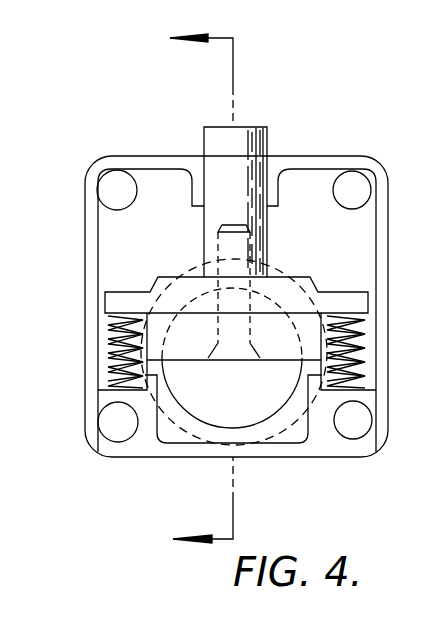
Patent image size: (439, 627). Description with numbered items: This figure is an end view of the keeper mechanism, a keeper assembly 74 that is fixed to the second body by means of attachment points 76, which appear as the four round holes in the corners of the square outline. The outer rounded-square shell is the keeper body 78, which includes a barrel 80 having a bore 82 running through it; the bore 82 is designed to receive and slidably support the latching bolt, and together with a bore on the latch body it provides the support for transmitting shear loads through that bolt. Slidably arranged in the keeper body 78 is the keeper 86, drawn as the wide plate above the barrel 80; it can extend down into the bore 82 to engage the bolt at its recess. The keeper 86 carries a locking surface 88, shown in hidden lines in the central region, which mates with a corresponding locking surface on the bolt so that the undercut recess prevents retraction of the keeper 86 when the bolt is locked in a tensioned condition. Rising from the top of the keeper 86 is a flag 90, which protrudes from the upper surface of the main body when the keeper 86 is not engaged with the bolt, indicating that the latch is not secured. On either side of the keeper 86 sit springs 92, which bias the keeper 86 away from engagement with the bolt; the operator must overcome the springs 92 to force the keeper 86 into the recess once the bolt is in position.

The keeper assembly 74 is at (70, 394).
The attachment points 76 is at (357, 180).
The keeper body 78 is at (85, 252).
The barrel 80 is at (182, 445).
The bore 82 is at (190, 412).
The keeper 86 is at (300, 280).
The locking surface 88 is at (285, 340).
The flag 90 is at (267, 131).
The springs 92 is at (360, 333).